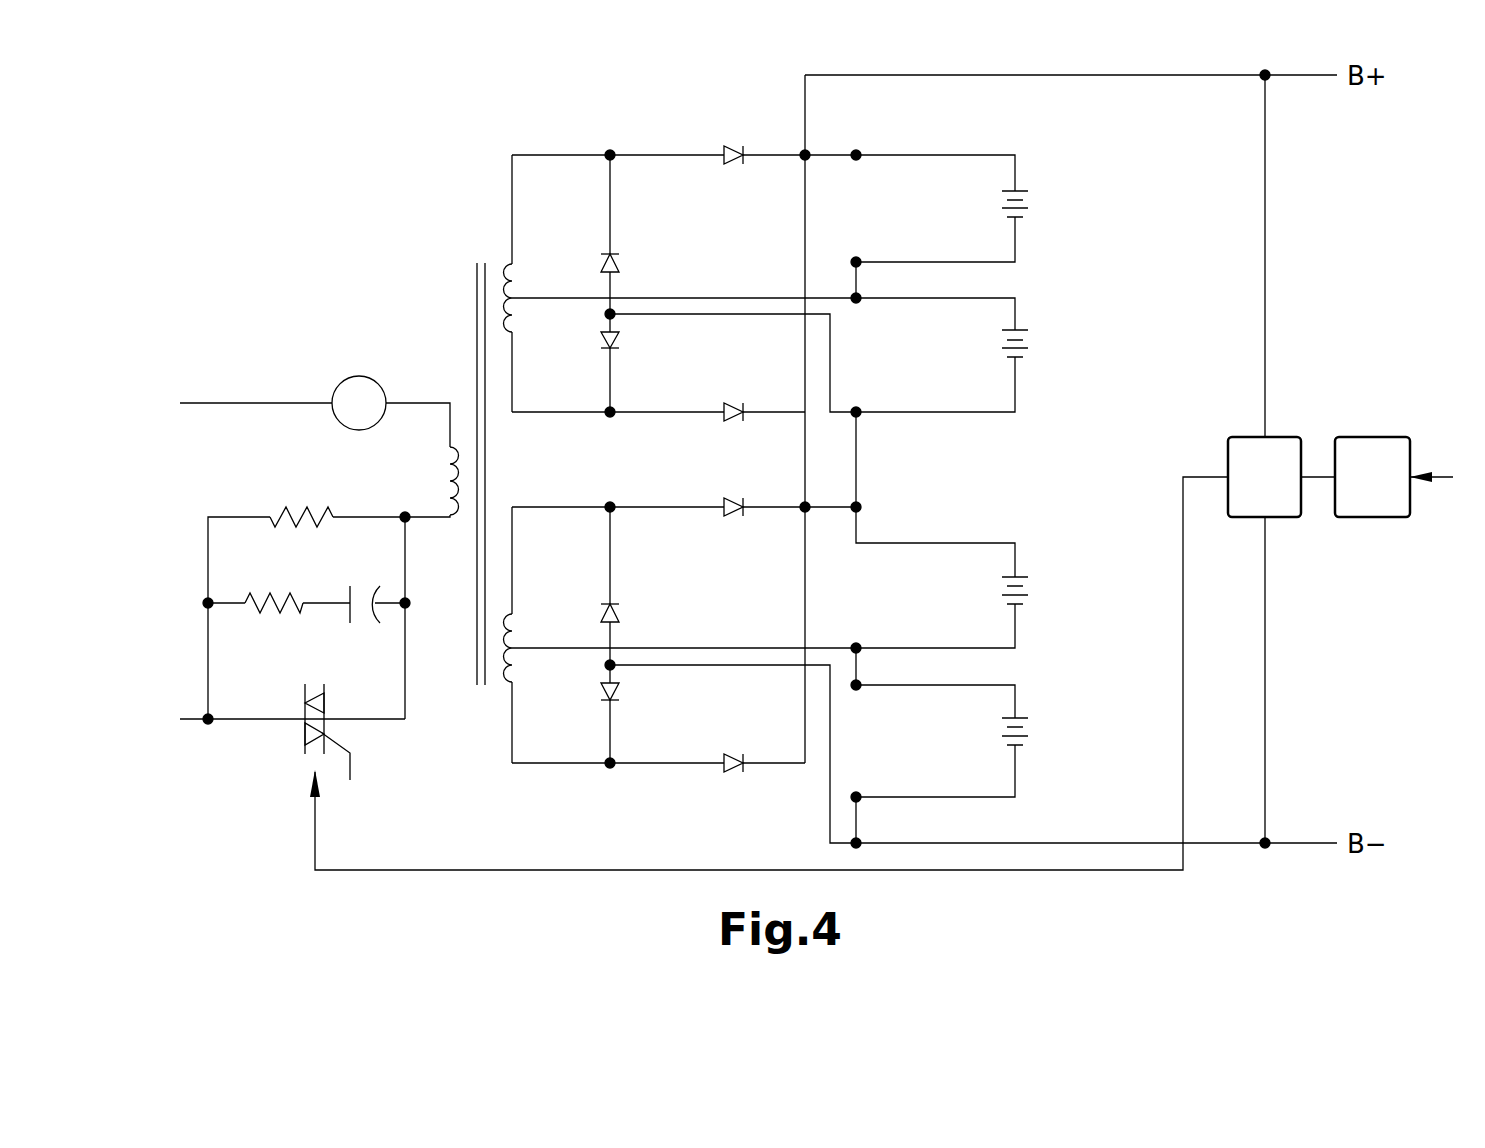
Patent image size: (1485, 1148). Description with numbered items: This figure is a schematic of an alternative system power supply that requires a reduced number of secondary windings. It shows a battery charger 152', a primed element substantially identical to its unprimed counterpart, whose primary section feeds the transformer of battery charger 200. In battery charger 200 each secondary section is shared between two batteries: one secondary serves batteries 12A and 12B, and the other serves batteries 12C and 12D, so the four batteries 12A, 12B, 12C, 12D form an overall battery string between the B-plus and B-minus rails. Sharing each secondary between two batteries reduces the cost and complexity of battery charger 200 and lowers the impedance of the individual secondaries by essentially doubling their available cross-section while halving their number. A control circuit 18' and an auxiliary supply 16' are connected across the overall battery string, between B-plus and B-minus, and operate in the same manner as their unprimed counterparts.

The battery charger 200 is at (473, 198).
The battery charger 152' is at (319, 497).
The battery 12A is at (969, 226).
The battery 12B is at (971, 355).
The battery 12C is at (971, 577).
The battery 12D is at (970, 745).
The control circuit 18' is at (1264, 477).
The auxiliary supply 16' is at (1377, 477).